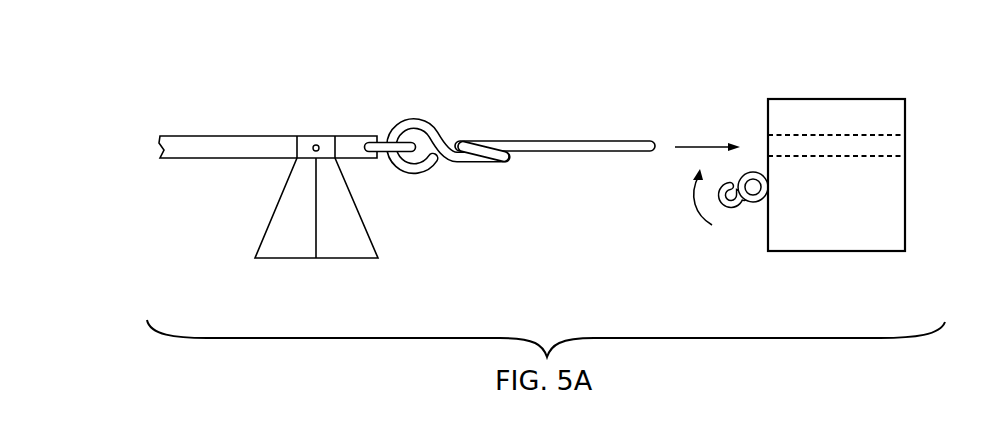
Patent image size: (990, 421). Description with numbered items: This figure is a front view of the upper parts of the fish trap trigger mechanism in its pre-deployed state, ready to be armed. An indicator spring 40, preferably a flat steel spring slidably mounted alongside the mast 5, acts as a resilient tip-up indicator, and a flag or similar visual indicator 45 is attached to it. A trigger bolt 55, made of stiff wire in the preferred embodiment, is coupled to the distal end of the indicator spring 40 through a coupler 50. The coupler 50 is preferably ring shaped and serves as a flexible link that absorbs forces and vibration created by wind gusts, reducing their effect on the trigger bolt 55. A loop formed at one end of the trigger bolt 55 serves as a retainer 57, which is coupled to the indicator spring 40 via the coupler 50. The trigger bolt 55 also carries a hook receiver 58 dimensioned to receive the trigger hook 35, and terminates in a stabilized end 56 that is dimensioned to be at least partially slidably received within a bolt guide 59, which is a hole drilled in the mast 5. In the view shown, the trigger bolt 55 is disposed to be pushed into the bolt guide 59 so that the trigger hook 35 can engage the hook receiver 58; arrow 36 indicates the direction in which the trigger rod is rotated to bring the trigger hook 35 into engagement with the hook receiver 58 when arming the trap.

The mast 5 is at (838, 251).
The trigger hook 35 is at (730, 206).
The arrow 36 is at (692, 206).
The indicator spring 40 is at (228, 136).
The visual indicator 45 is at (265, 220).
The coupler 50 is at (387, 136).
The trigger bolt 55 is at (552, 141).
The stabilized end 56 is at (657, 147).
The retainer 57 is at (418, 175).
The hook receiver 58 is at (487, 150).
The bolt guide 59 is at (852, 135).